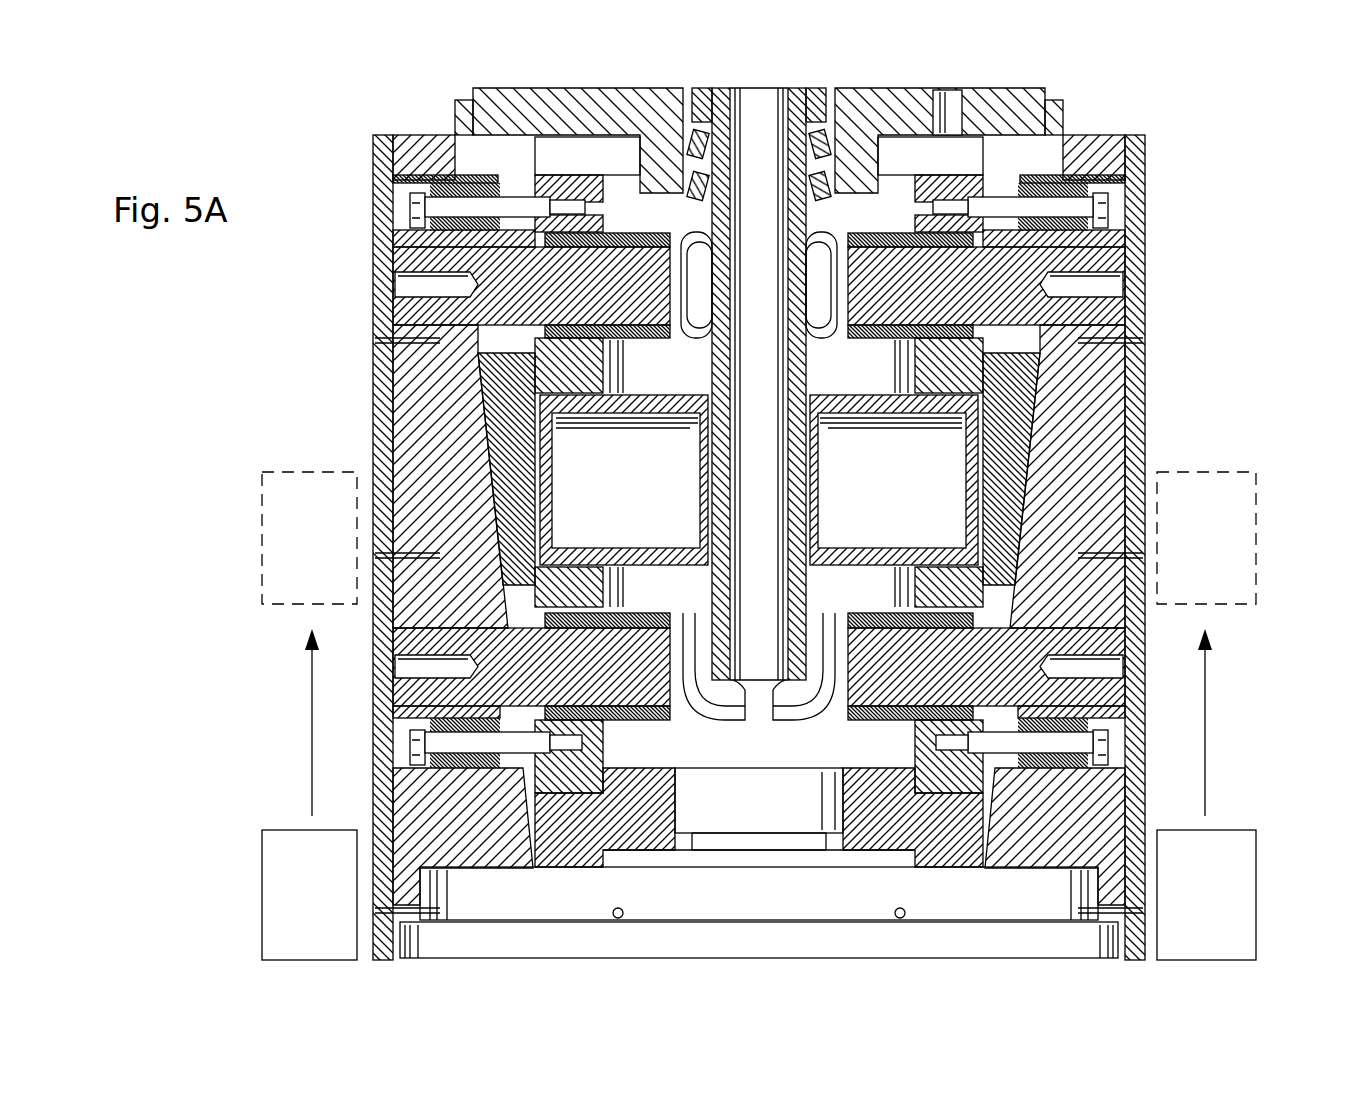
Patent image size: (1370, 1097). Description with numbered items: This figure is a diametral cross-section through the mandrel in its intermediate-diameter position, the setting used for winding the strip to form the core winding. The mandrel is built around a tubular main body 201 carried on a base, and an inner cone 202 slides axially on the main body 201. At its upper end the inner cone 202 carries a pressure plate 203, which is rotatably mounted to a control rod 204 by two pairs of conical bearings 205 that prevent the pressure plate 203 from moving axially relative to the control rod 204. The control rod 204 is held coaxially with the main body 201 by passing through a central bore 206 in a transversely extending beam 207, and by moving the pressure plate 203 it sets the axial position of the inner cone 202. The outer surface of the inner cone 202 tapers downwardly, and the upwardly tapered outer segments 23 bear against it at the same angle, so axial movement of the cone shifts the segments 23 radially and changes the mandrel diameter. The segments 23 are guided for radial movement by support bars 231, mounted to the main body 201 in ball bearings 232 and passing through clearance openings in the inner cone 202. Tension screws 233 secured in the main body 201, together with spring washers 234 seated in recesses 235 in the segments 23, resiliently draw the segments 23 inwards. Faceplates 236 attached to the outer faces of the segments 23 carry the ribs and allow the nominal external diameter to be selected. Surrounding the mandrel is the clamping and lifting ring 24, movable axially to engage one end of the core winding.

The outer segments 23 is at (415, 150).
The clamping and lifting ring 24 is at (1205, 878).
The tubular main body 201 is at (583, 362).
The inner cone 202 is at (492, 382).
The pressure plate 203 is at (870, 108).
The control rod 204 is at (708, 103).
The conical bearings 205 is at (814, 95).
The central bore 206 is at (703, 452).
The transversely extending beam 207 is at (636, 556).
The support bars 231 is at (1110, 298).
The ball bearings 232 is at (880, 340).
The tension screws 233 is at (510, 205).
The spring washers 234 is at (437, 190).
The recesses 235 is at (1143, 183).
The faceplates 236 is at (1145, 240).